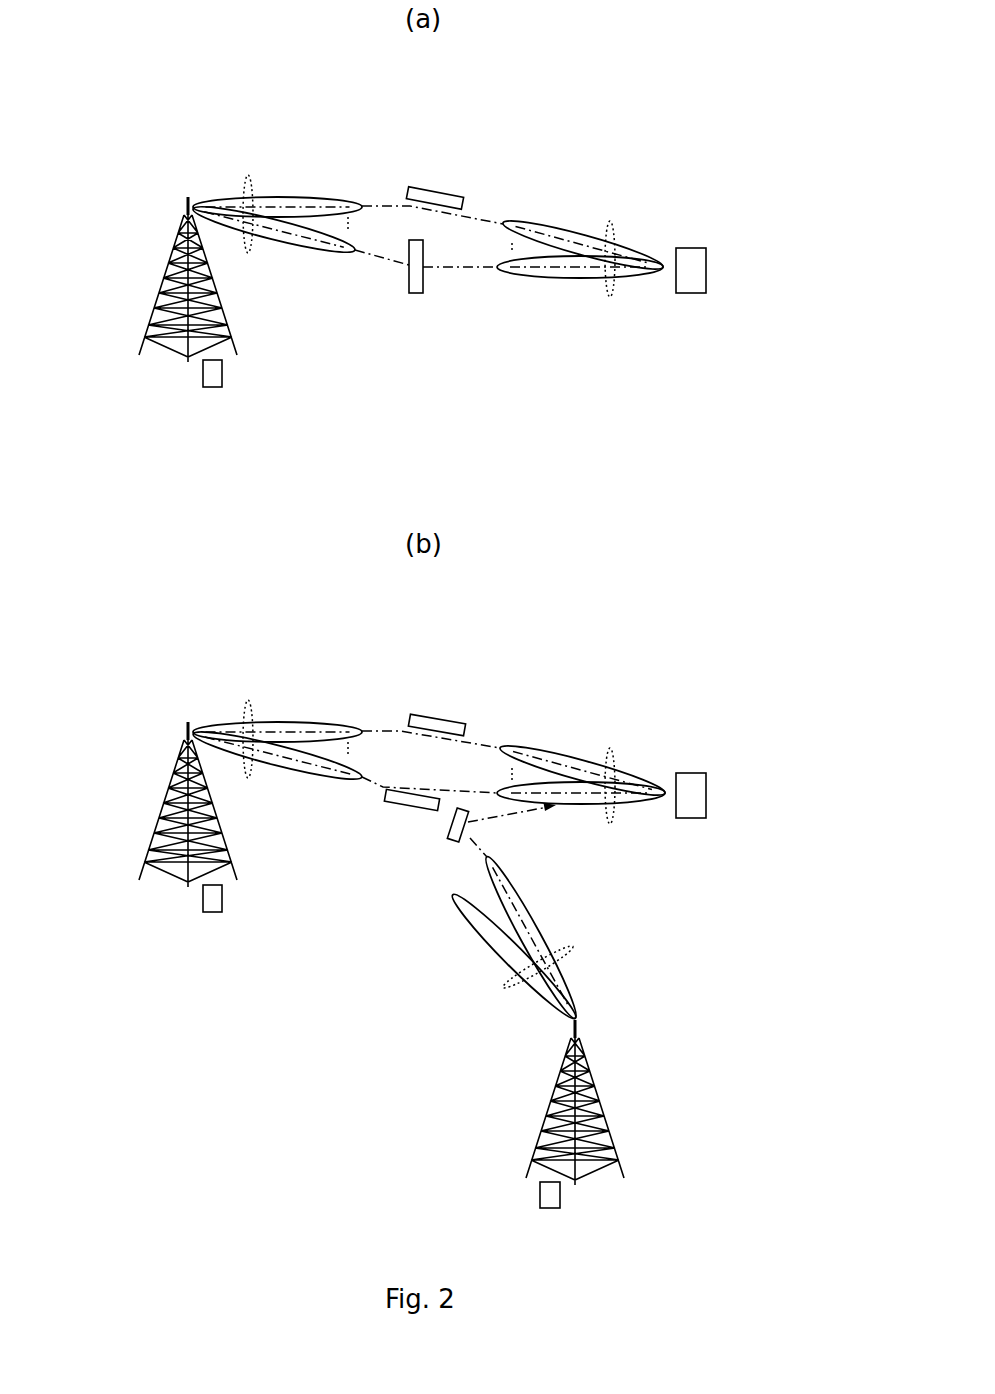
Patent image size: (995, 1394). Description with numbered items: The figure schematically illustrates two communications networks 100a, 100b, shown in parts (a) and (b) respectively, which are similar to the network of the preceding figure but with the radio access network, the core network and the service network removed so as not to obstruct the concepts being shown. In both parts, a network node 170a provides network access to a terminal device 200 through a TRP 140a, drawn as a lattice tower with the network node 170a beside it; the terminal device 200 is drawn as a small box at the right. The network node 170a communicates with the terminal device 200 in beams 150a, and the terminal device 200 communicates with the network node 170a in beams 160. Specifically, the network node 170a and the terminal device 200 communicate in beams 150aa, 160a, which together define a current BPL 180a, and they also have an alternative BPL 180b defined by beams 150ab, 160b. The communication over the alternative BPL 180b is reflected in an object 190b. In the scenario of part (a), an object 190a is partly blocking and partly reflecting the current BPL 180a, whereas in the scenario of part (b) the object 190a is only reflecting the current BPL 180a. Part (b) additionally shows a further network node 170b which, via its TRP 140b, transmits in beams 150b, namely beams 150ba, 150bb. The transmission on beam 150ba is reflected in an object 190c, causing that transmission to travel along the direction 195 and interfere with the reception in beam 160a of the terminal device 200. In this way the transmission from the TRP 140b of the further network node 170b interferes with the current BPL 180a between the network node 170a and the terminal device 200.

The communications network 100a is at (188, 104).
The communications network 100b is at (188, 629).
The TRP 140a is at (184, 205).
The TRP 140b is at (578, 1025).
The beams 150a is at (278, 483).
The beam 150aa is at (290, 252).
The beam 150ab is at (303, 198).
The beams 150b is at (517, 938).
The beam 150ba is at (532, 905).
The beam 150bb is at (487, 943).
The beams 160 is at (582, 526).
The beam 160a is at (555, 280).
The beam 160b is at (543, 228).
The network node 170a is at (203, 372).
The further network node 170b is at (561, 1198).
The current BPL 180a is at (468, 272).
The alternative BPL 180b is at (382, 203).
The object 190a is at (415, 296).
The object 190b is at (438, 190).
The object 190c is at (455, 843).
The direction 195 is at (505, 822).
The terminal device 200 is at (692, 295).